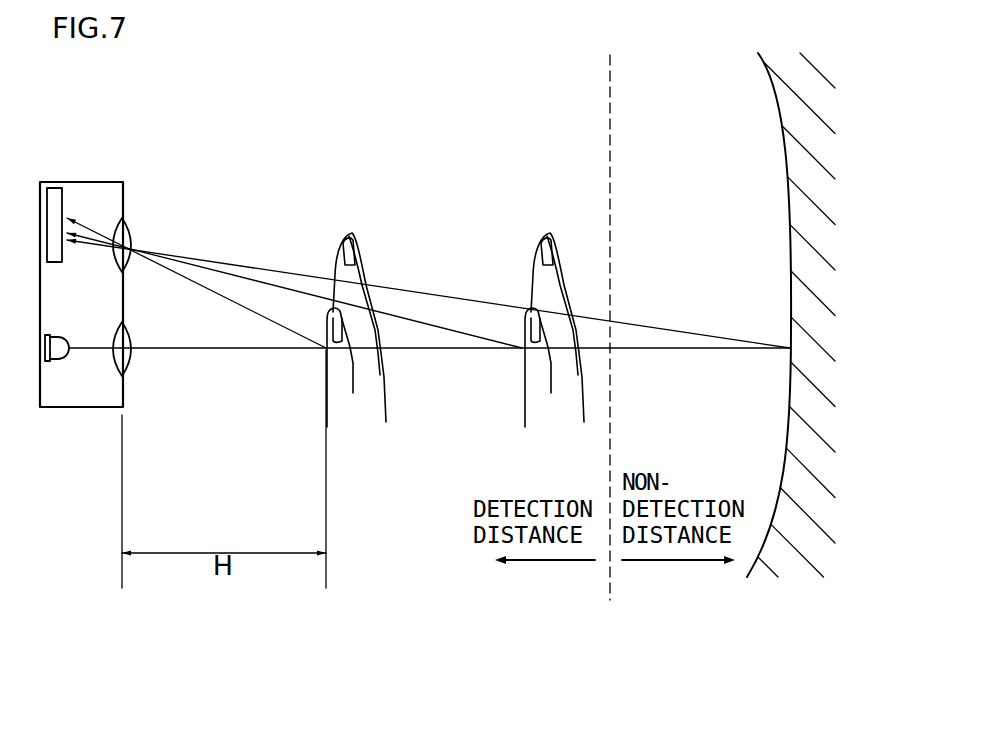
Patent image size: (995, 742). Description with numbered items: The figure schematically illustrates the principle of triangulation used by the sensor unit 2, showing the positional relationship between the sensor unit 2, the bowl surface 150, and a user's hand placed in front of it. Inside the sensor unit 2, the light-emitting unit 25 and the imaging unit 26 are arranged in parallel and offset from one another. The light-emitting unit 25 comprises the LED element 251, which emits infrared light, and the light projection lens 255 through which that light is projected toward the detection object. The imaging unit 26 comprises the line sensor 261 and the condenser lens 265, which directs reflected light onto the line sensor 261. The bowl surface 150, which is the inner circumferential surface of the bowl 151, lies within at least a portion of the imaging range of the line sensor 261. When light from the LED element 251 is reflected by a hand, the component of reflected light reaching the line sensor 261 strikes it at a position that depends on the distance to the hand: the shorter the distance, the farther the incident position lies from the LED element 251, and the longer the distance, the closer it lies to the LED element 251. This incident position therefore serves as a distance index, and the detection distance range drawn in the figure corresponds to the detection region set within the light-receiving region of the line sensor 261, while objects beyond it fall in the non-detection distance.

The sensor unit 2 is at (95, 455).
The light-emitting unit 25 is at (130, 387).
The LED element 251 is at (55, 352).
The light projection lens 255 is at (127, 360).
The imaging unit 26 is at (130, 206).
The line sensor 261 is at (55, 200).
The condenser lens 265 is at (128, 232).
The bowl surface 150 is at (781, 338).
The bowl 151 is at (807, 550).